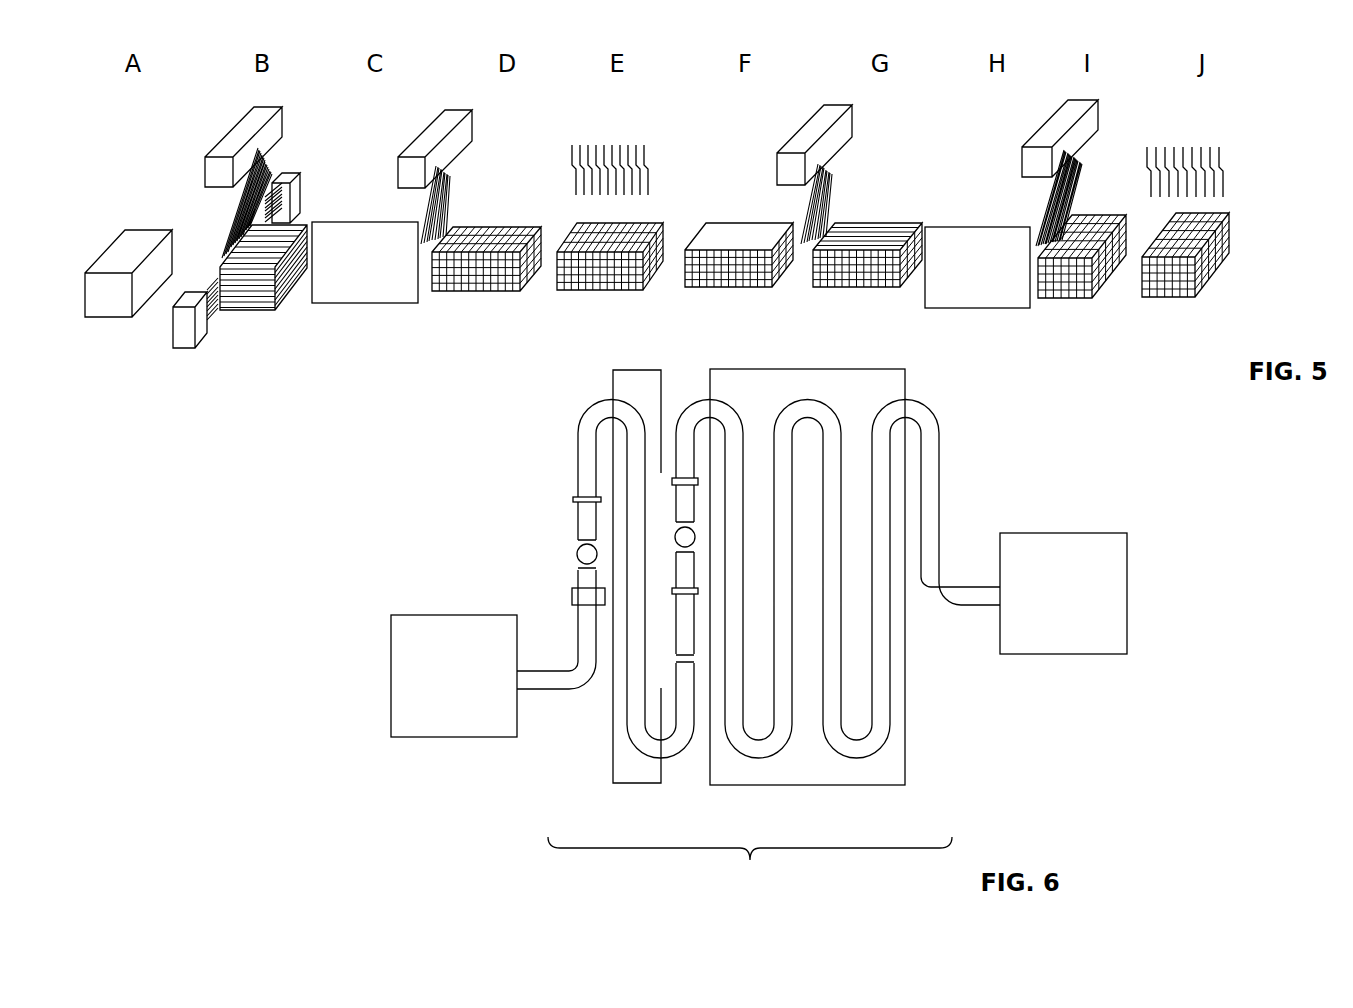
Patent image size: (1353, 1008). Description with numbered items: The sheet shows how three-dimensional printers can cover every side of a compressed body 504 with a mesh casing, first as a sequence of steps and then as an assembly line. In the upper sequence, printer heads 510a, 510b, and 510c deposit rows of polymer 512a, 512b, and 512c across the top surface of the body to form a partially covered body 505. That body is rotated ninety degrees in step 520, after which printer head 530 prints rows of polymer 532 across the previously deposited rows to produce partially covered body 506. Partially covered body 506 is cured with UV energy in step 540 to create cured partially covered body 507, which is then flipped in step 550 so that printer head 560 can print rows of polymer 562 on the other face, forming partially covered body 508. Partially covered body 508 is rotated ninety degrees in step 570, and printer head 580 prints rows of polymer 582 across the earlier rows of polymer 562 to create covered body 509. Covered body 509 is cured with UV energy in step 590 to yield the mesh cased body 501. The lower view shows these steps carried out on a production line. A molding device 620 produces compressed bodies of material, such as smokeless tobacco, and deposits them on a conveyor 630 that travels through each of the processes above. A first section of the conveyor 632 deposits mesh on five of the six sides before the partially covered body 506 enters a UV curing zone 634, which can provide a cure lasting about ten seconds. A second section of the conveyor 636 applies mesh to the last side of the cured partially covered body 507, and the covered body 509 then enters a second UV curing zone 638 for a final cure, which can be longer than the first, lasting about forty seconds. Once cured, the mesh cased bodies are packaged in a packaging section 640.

In FIG. 5, the mesh cased body 501 is at (1225, 242).
In FIG. 5, the compressed body 504 is at (103, 303).
In FIG. 5, the partially covered body 505 is at (260, 310).
In FIG. 5, the partially covered body 506 is at (472, 291).
In FIG. 5, the cured partially covered body 507 is at (603, 290).
In FIG. 5, the partially covered body 508 is at (855, 287).
In FIG. 5, the covered body 509 is at (1062, 298).
In FIG. 5, the 3D printer head 510a is at (282, 127).
In FIG. 5, the 3D printer head 510b is at (303, 190).
In FIG. 5, the 3D printer head 510c is at (200, 330).
In FIG. 5, the rows of polymer 512a is at (233, 210).
In FIG. 5, the rows of polymer 512b is at (268, 200).
In FIG. 5, the rows of polymer 512c is at (212, 283).
In FIG. 5, the rotate step 520 is at (373, 303).
In FIG. 5, the 3D printer head 530 is at (472, 123).
In FIG. 5, the rows of polymer 532 is at (448, 205).
In FIG. 5, the curing step 540 is at (647, 150).
In FIG. 5, the flip step 550 is at (738, 175).
In FIG. 5, the 3D printer head 560 is at (852, 118).
In FIG. 5, the rows of polymer 562 is at (828, 188).
In FIG. 5, the rotate step 570 is at (977, 308).
In FIG. 5, the 3D printer head 580 is at (1098, 112).
In FIG. 5, the rows of polymer 582 is at (1077, 188).
In FIG. 5, the curing step 590 is at (1220, 152).
In FIG. 6, the molding device 620 is at (441, 727).
In FIG. 6, the conveyor 630 is at (750, 866).
In FIG. 6, the first section of the conveyor 632 is at (567, 687).
In FIG. 6, the UV curing zone 634 is at (633, 776).
In FIG. 6, the second section of the conveyor 636 is at (700, 415).
In FIG. 6, the second UV curing zone 638 is at (872, 785).
In FIG. 6, the packaging section 640 is at (1070, 638).